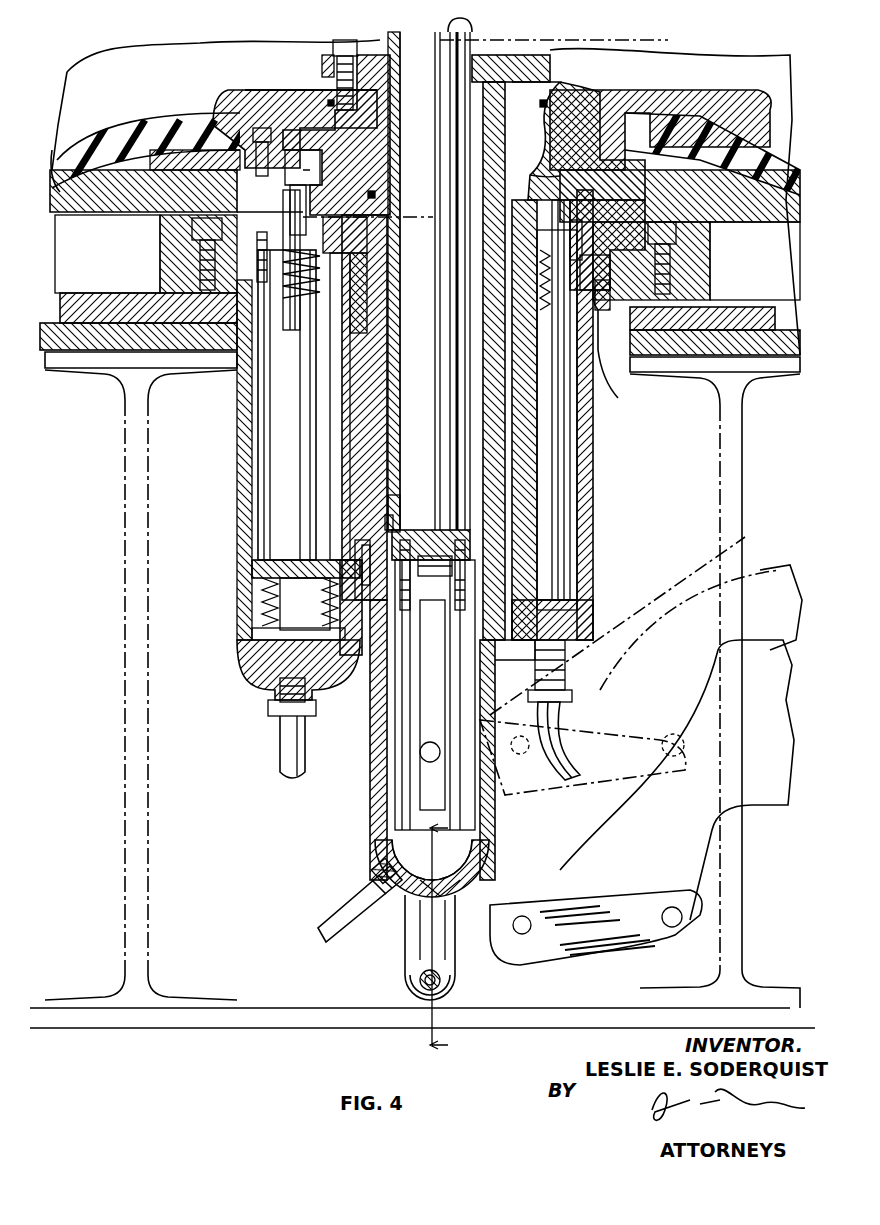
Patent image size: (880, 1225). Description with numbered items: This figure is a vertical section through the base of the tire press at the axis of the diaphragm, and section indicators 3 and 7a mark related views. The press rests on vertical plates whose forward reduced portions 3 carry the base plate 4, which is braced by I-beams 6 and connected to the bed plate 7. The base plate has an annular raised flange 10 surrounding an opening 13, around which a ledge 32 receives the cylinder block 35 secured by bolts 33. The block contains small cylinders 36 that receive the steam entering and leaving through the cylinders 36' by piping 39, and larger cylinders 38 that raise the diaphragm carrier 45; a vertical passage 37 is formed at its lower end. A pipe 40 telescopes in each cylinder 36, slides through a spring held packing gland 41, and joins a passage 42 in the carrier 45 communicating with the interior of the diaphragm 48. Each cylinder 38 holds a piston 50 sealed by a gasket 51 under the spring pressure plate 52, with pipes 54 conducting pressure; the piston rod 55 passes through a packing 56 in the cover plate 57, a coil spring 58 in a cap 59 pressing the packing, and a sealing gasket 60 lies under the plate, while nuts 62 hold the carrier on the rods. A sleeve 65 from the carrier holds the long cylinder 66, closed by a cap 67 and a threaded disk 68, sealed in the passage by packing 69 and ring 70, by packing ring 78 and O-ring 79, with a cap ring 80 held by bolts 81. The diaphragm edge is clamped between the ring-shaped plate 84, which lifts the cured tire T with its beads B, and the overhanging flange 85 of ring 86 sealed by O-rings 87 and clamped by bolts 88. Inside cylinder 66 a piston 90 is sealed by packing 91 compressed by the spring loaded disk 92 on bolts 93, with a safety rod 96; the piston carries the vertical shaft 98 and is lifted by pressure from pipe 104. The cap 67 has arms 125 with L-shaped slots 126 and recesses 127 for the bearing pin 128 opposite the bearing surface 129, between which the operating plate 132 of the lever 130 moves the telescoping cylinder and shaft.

The reduced portions of the vertical plates 3 is at (668, 14).
The base plate 4 is at (76, 345).
The I-beams 6 is at (138, 668).
The bed plate 7 is at (554, 1022).
The section line 7a is at (453, 936).
The annular raised flange 10 is at (632, 318).
The opening 13 is at (600, 340).
The ledge 32 is at (226, 322).
The bolts 33 is at (195, 232).
The cylinder block 35 is at (610, 215).
The small cylinders 36 is at (577, 415).
The cylinders 36' is at (580, 605).
The vertical passage 37 is at (366, 650).
The large cylinders 38 is at (236, 560).
The piping 39 is at (562, 702).
The pipe 40 is at (568, 452).
The packing gland 41 is at (584, 235).
The passage 42 is at (544, 94).
The diaphragm carrier 45 is at (562, 182).
The diaphragm 48 is at (126, 142).
The piston 50 is at (366, 552).
The gasket 51 is at (250, 580).
The spring pressure plate 52 is at (255, 600).
The pipes 54 is at (286, 746).
The piston rod 55 is at (298, 404).
The packing 56 is at (282, 284).
The cover plate 57 is at (365, 248).
The coil spring 58 is at (288, 292).
The cap 59 is at (320, 290).
The sealing gasket 60 is at (606, 265).
The nuts 62 is at (304, 166).
The sleeve 65 is at (374, 406).
The cylinder 66 is at (373, 746).
The cap 67 is at (478, 862).
The threaded disk 68 is at (484, 62).
The packing 69 is at (496, 640).
The ring 70 is at (370, 540).
The packing ring 78 is at (394, 500).
The O-ring 79 is at (380, 196).
The cap ring 80 is at (368, 55).
The bolts 81 is at (344, 40).
The ring-shaped plate 84 is at (190, 128).
The overhanging flange 85 is at (222, 92).
The ring 86 is at (266, 90).
The O-rings 87 is at (328, 102).
The bolts 88 is at (248, 152).
The piston 90 is at (396, 516).
The packing 91 is at (392, 522).
The spring loaded disk 92 is at (456, 576).
The bolts 93 is at (422, 556).
The rod 96 is at (428, 678).
The vertical shaft 98 is at (472, 30).
The pipe 104 is at (360, 920).
The arms 125 is at (396, 782).
The L-shaped slots 126 is at (418, 984).
The recesses 127 is at (452, 994).
The bearing pin 128 is at (420, 756).
The bearing surface 129 is at (470, 900).
The lever 130 is at (762, 642).
The operating plate 132 is at (588, 780).
The beads B is at (158, 118).
The cured tire T is at (96, 152).